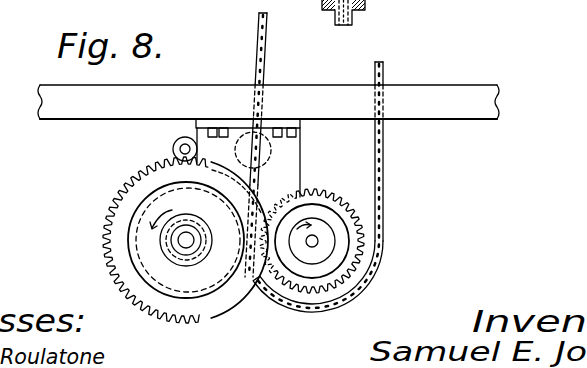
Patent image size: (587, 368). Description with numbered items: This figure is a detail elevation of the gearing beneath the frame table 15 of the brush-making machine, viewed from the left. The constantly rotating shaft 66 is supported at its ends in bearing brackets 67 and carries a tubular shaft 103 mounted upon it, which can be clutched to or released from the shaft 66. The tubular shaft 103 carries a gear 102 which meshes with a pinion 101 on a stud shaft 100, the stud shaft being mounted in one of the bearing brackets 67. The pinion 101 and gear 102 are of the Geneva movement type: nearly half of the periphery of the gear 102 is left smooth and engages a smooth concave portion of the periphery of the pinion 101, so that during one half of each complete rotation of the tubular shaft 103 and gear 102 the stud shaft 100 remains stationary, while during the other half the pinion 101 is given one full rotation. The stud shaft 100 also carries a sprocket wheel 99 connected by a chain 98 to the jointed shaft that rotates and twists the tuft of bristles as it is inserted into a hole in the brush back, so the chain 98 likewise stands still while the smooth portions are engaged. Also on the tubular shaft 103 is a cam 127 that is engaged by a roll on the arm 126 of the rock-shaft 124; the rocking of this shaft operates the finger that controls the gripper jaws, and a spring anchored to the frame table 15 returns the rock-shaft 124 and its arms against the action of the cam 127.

The frame table 15 is at (478, 90).
The shaft 66 is at (186, 240).
The bearing brackets 67 is at (287, 150).
The chain 98 is at (384, 140).
The sprocket wheel 99 is at (325, 182).
The stud shaft 100 is at (318, 240).
The pinion 101 is at (357, 265).
The gear 102 is at (199, 312).
The tubular shaft 103 is at (165, 253).
The rock-shaft 124 is at (268, 125).
The arm 126 is at (208, 117).
The cam 127 is at (160, 172).